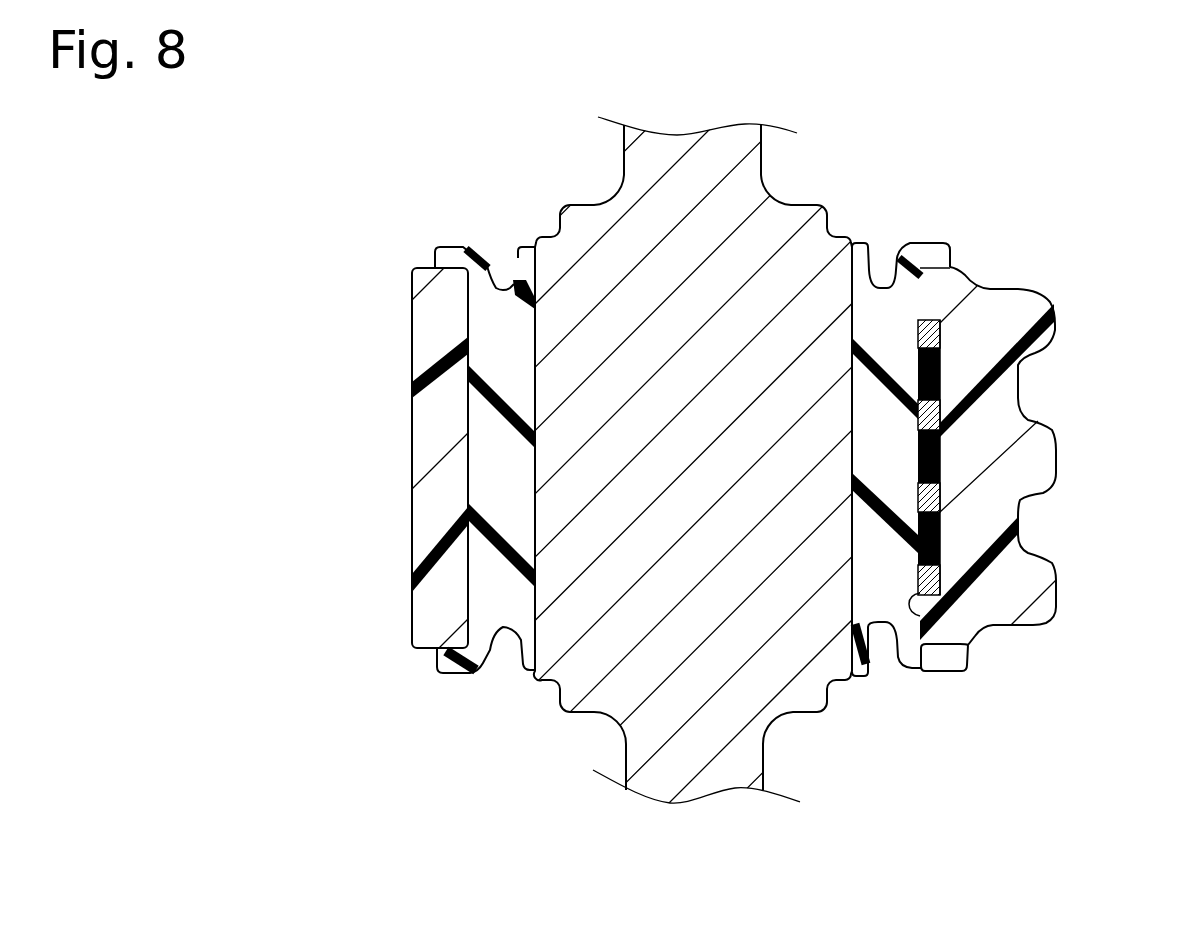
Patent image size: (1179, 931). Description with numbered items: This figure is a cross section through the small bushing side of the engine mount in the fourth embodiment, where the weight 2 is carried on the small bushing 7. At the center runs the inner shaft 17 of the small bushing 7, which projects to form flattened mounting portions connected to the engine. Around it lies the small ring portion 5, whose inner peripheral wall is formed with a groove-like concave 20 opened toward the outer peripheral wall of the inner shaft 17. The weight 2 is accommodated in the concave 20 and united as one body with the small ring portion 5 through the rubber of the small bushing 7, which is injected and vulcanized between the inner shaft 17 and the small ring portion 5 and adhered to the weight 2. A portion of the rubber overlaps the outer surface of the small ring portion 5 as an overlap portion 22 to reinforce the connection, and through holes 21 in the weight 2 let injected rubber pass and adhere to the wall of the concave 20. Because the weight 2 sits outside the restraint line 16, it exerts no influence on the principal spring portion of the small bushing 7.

The weight 2 is at (941, 333).
The small ring portion 5 is at (1033, 461).
The small bushing 7 is at (513, 281).
The restraint line 16 is at (918, 680).
The inner shaft 17 is at (613, 643).
The groove-like concave 20 is at (920, 616).
The through holes 21 is at (940, 360).
The overlap portion 22 is at (937, 243).